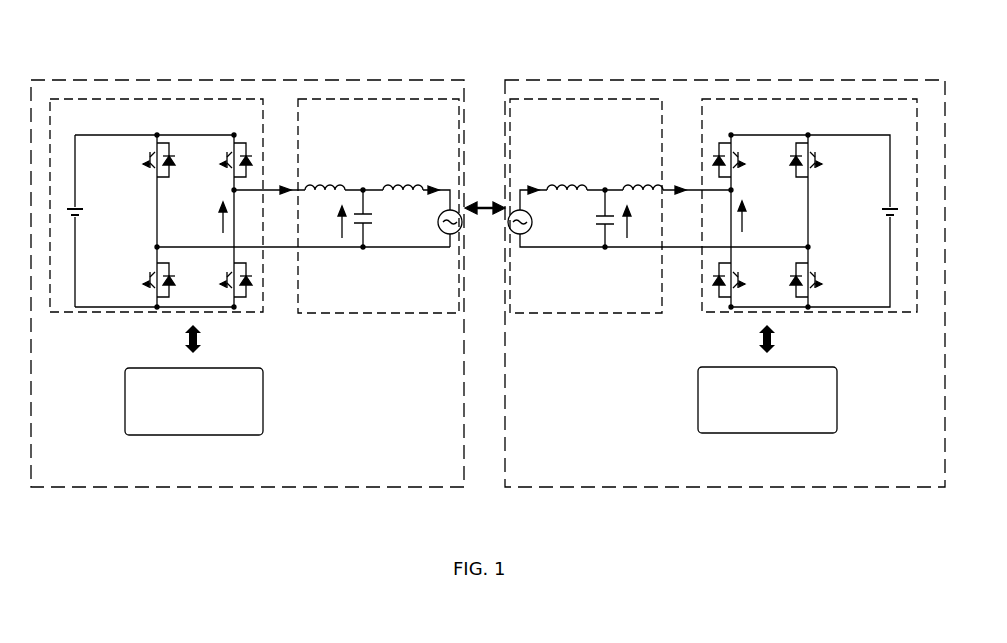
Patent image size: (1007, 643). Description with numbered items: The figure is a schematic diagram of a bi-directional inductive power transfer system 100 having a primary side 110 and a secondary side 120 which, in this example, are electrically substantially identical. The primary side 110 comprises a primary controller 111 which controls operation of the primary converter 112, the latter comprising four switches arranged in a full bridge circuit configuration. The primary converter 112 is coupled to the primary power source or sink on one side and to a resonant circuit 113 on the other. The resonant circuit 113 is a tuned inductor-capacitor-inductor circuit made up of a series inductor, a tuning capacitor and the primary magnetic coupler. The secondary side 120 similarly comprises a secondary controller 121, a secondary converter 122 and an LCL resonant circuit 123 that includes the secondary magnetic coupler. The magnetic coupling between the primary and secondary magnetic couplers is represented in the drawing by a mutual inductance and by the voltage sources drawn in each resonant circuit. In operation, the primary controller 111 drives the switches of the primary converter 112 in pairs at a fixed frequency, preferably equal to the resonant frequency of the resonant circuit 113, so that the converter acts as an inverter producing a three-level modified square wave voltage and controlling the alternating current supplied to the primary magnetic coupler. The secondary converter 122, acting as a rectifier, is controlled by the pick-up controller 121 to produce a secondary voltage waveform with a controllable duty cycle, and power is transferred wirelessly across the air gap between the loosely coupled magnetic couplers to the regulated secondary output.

The inductive power transfer system 100 is at (578, 68).
The primary side 110 is at (421, 470).
The primary controller 111 is at (254, 401).
The primary converter 112 is at (243, 128).
The resonant circuit 113 is at (443, 126).
The secondary side 120 is at (570, 470).
The secondary controller 121 is at (722, 398).
The secondary converter 122 is at (897, 126).
The LCL resonant circuit 123 is at (548, 131).